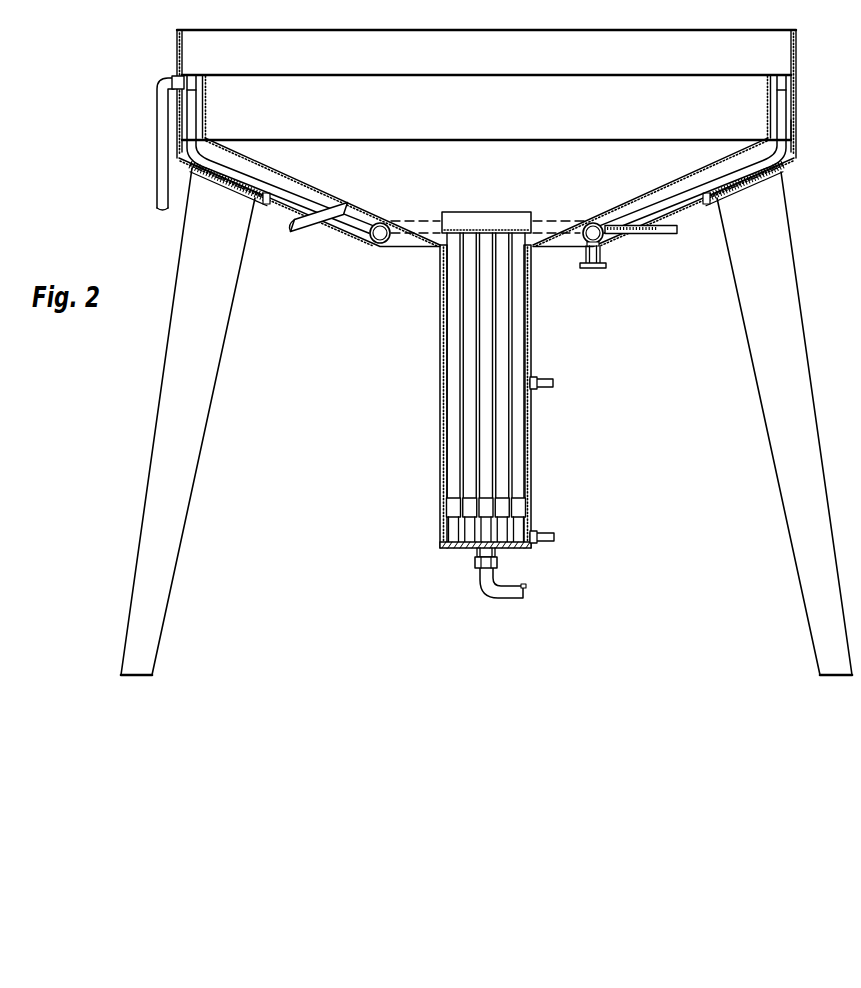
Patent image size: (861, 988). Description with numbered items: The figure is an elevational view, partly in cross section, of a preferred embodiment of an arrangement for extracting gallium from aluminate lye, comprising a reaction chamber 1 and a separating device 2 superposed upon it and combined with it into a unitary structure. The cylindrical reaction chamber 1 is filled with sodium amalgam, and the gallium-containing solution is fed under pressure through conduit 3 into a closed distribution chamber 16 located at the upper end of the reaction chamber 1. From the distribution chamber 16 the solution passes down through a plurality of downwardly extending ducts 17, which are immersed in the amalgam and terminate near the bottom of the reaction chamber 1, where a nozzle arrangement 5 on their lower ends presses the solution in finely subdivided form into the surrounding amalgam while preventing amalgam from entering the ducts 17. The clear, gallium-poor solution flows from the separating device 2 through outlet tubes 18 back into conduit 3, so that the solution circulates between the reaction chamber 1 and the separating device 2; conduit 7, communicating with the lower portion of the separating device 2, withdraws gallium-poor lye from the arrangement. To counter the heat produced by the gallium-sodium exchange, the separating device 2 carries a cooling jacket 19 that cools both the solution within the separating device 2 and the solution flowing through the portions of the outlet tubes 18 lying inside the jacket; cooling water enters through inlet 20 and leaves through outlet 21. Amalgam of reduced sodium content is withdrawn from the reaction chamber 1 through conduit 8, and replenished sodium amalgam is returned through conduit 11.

The reaction chamber 1 is at (439, 363).
The separating device 2 is at (486, 138).
The conduit 3 is at (378, 245).
The nozzle arrangement 5 is at (462, 549).
The conduit 7 is at (304, 232).
The conduit 8 is at (549, 379).
The conduit 11 is at (548, 536).
The distribution chamber 16 is at (486, 224).
The ducts 17 is at (488, 462).
The outlet tubes 18 is at (192, 74).
The cooling jacket 19 is at (794, 132).
The inlet 20 is at (667, 234).
The outlet 21 is at (157, 179).